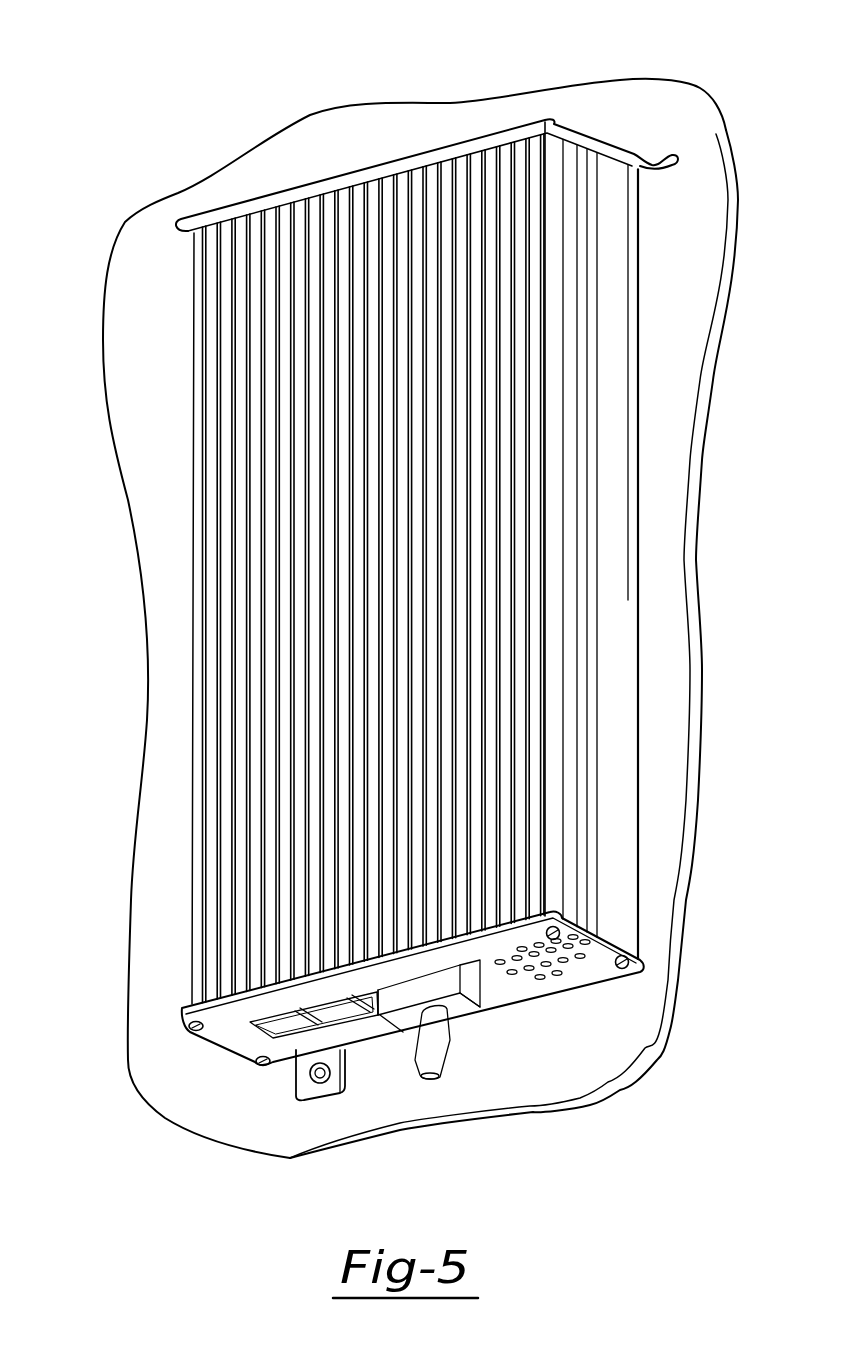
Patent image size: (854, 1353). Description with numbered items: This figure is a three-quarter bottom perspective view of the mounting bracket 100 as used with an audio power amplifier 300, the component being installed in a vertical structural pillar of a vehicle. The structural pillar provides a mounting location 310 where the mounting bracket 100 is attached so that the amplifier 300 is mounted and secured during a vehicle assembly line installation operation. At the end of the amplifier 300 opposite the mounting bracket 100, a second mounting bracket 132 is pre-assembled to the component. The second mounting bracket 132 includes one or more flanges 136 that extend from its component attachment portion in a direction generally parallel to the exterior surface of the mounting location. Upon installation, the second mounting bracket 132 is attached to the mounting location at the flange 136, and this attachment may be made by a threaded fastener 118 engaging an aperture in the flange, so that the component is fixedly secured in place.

The mounting bracket 100 is at (122, 313).
The audio power amplifier 300 is at (190, 683).
The mounting location 310 is at (239, 96).
The threaded fastener 118 is at (194, 1030).
The second mounting bracket 132 is at (528, 997).
The flange 136 is at (303, 1098).